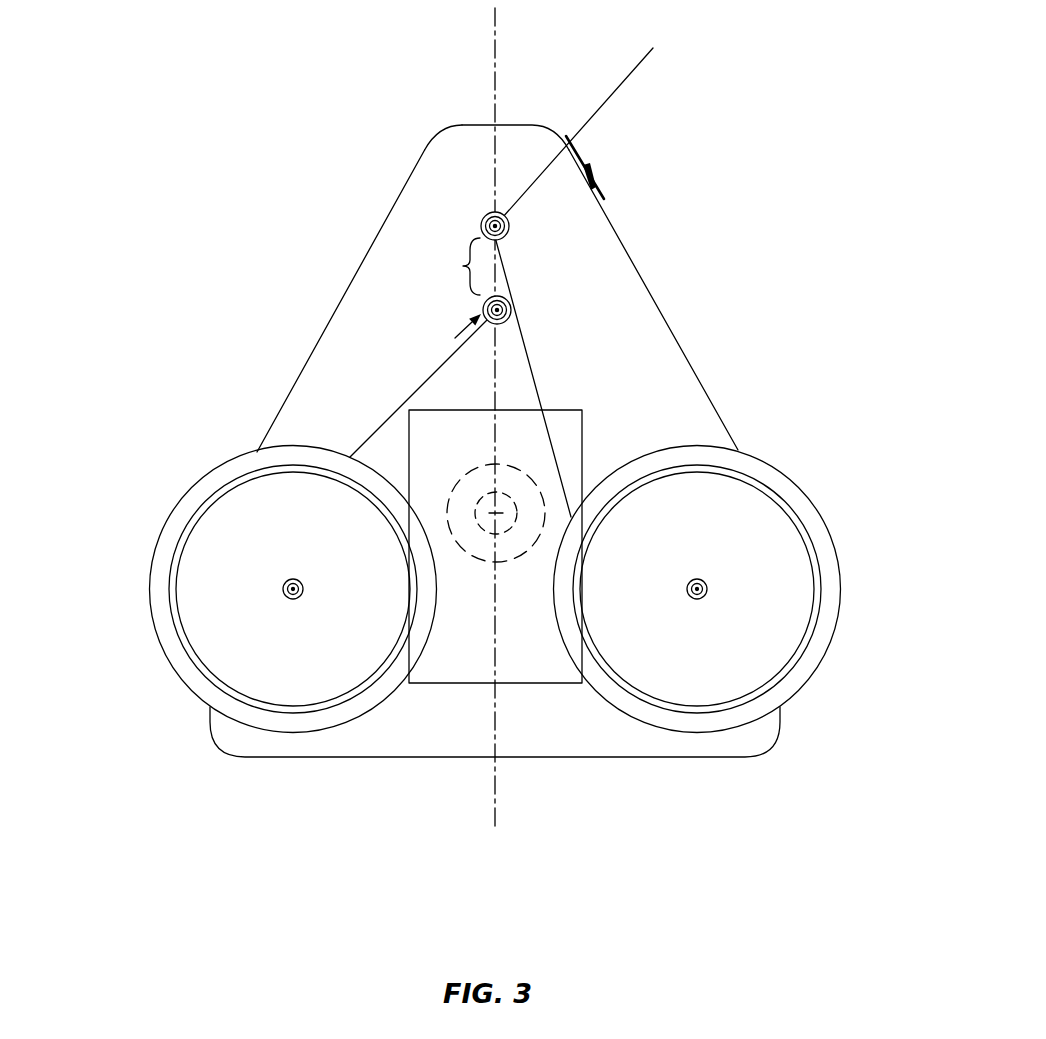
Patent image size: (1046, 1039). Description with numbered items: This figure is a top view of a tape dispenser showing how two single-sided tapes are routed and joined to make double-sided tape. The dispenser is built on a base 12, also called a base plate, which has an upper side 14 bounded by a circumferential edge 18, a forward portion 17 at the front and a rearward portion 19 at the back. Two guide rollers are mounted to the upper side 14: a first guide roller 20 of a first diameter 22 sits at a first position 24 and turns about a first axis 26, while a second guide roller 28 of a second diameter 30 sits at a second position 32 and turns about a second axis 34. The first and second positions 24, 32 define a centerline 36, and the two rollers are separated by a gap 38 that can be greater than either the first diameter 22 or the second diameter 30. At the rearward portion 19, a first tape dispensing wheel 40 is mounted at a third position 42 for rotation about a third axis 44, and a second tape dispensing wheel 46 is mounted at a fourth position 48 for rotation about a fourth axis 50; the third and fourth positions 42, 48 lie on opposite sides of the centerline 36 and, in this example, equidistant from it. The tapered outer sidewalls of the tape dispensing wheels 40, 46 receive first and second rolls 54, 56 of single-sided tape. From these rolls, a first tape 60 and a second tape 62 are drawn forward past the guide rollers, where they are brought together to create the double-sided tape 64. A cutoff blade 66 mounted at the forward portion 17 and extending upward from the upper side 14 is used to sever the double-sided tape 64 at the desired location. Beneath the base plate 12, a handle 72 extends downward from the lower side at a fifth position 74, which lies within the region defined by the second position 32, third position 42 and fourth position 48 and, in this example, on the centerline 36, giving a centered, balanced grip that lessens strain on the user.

The base 12 is at (489, 419).
The upper side 14 is at (636, 330).
The forward portion 17 is at (497, 265).
The circumferential edge 18 is at (495, 765).
The rearward portion 19 is at (580, 700).
The first guide roller 20 is at (476, 215).
The first diameter 22 is at (424, 213).
The first position 24 is at (392, 213).
The first axis 26 is at (392, 213).
The second guide roller 28 is at (463, 291).
The second diameter 30 is at (398, 291).
The second position 32 is at (372, 291).
The second axis 34 is at (372, 291).
The centerline 36 is at (497, 27).
The gap 38 is at (455, 266).
The first tape dispensing wheel 40 is at (247, 589).
The third position 42 is at (180, 569).
The third axis 44 is at (283, 589).
The second tape dispensing wheel 46 is at (737, 557).
The fourth position 48 is at (803, 631).
The fourth axis 50 is at (703, 596).
The first roll of single-sided tape 54 is at (218, 477).
The second roll of single-sided tape 56 is at (687, 456).
The first tape 60 is at (431, 382).
The second tape 62 is at (528, 355).
The double-sided tape 64 is at (613, 93).
The cutoff blade 66 is at (581, 156).
The handle 72 is at (495, 546).
The fifth position 74 is at (497, 520).